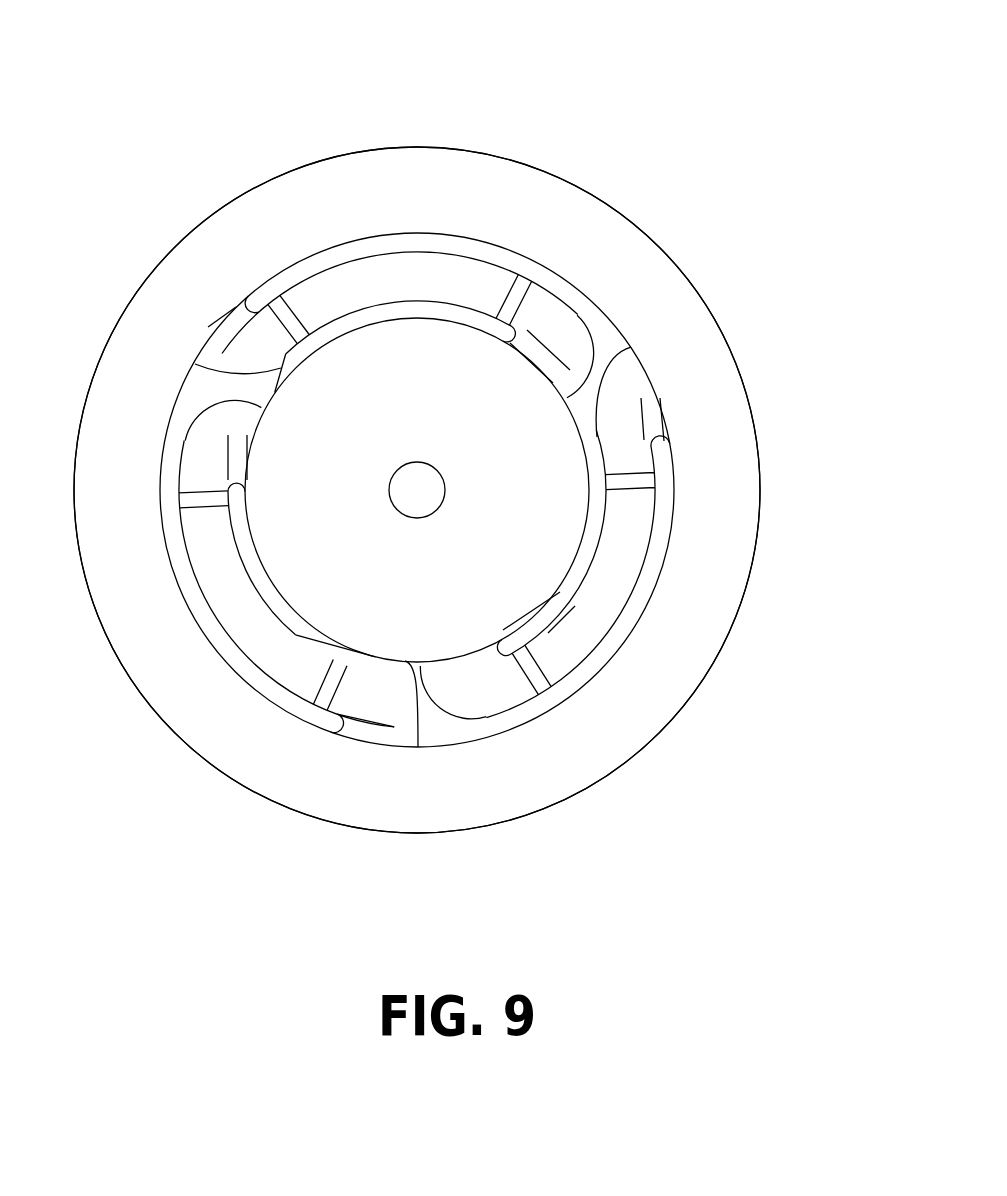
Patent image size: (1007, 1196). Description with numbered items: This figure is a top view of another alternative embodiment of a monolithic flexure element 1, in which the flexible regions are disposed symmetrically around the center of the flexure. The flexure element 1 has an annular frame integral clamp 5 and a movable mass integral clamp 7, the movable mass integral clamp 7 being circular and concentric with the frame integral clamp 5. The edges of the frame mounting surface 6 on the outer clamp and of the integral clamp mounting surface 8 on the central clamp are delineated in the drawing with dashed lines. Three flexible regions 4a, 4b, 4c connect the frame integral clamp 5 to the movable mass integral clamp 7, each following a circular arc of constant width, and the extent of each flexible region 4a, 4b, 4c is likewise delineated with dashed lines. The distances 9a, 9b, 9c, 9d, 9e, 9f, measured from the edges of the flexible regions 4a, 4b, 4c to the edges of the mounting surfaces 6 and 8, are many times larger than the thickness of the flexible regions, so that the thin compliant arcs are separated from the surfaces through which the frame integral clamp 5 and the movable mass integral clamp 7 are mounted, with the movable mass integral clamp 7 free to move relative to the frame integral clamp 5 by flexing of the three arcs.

The monolithic flexure element 1 is at (614, 121).
The flexible region 4a is at (630, 603).
The flexible region 4b is at (232, 643).
The flexible region 4c is at (437, 252).
The frame integral clamp 5 is at (787, 464).
The frame mounting surface 6 is at (652, 375).
The movable mass integral clamp 7 is at (362, 327).
The integral clamp mounting surface 8 is at (470, 653).
The distance 9a is at (172, 462).
The distance 9b is at (360, 790).
The distance 9c is at (583, 670).
The distance 9d is at (590, 437).
The distance 9e is at (585, 310).
The distance 9f is at (275, 373).